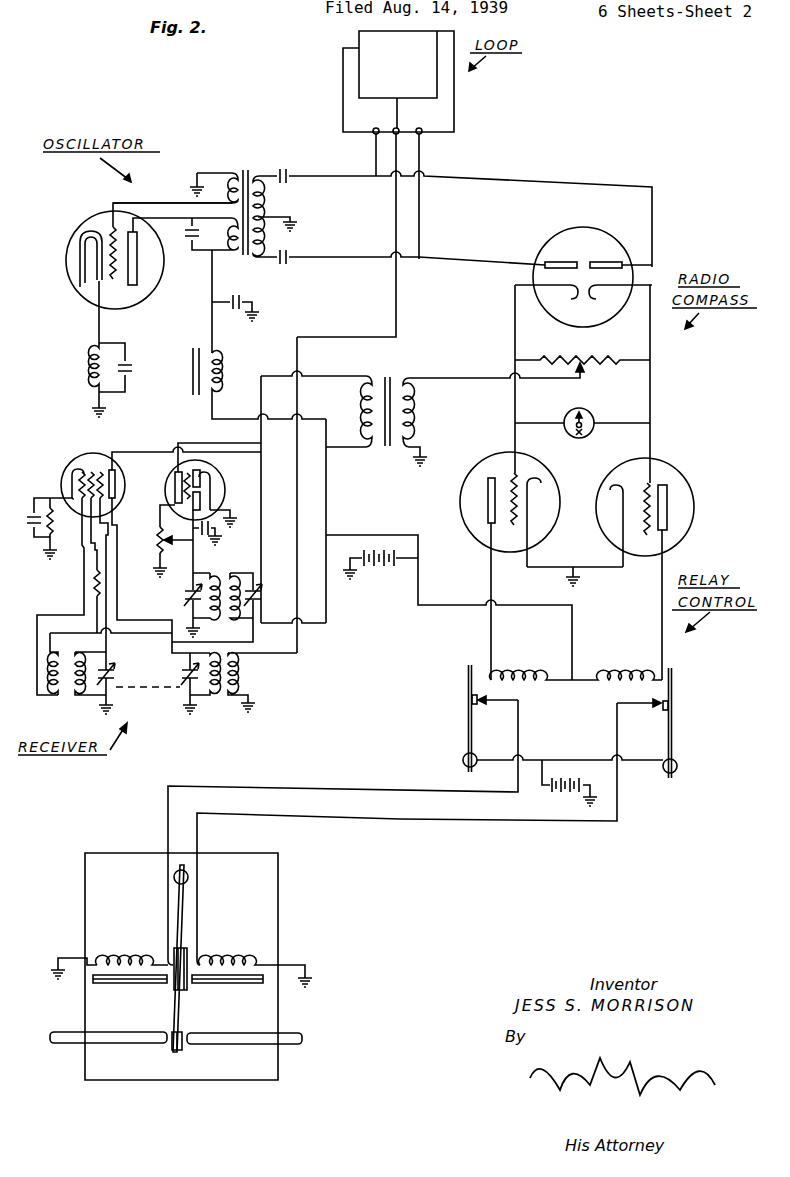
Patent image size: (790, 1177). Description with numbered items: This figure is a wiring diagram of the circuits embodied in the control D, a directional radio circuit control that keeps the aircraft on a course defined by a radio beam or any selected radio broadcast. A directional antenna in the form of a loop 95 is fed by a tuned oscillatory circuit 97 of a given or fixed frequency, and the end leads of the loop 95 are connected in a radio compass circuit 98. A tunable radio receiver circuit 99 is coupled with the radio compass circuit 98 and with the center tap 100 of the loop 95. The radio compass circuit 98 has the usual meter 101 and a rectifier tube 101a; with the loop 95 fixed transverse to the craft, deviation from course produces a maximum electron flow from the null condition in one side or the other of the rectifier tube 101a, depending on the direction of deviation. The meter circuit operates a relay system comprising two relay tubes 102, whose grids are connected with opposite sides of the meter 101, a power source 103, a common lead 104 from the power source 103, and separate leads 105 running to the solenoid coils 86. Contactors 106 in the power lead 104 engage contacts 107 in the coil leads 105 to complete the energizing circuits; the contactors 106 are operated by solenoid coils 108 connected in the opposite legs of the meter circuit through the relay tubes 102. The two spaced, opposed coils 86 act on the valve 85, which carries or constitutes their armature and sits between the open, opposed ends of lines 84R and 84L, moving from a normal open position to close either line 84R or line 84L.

The loop 95 is at (454, 95).
The tuned oscillatory circuit 97 is at (244, 170).
The radio compass circuit 98 is at (650, 343).
The radio receiver circuit 99 is at (286, 668).
The center tap 100 is at (393, 211).
The meter 101 is at (592, 414).
The rectifier tube 101a is at (552, 238).
The relay tubes 102 is at (688, 477).
The power source 103 is at (565, 794).
The common lead 104 is at (576, 759).
The leads 105 is at (327, 813).
The contactors 106 is at (695, 688).
The contacts 107 is at (668, 712).
The solenoid coils 108 is at (616, 677).
The control D is at (370, 822).
The line 84R is at (137, 1044).
The line 84L is at (225, 1045).
The valve 85 is at (184, 1002).
The solenoid coils 86 is at (227, 960).